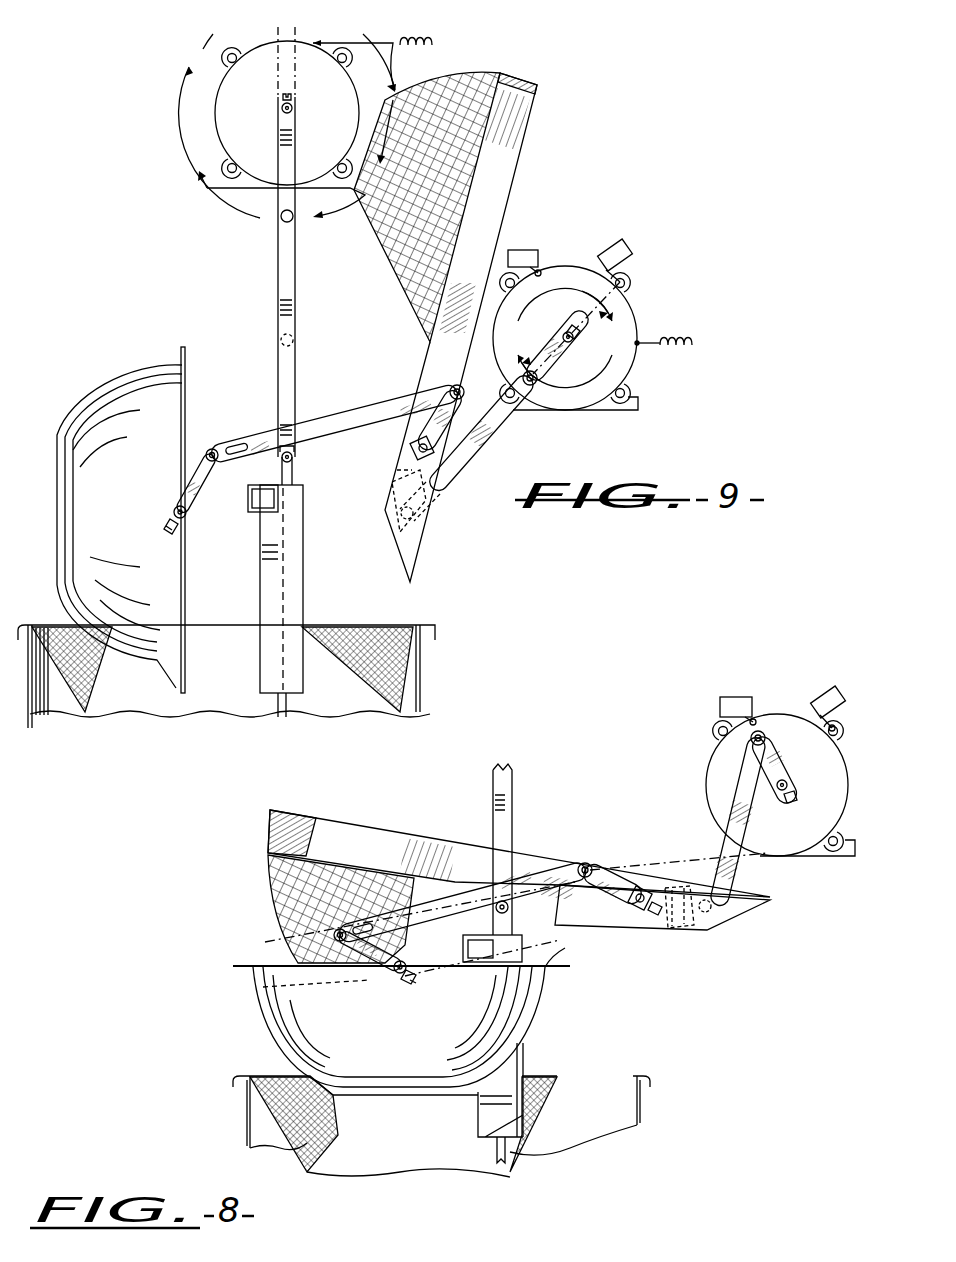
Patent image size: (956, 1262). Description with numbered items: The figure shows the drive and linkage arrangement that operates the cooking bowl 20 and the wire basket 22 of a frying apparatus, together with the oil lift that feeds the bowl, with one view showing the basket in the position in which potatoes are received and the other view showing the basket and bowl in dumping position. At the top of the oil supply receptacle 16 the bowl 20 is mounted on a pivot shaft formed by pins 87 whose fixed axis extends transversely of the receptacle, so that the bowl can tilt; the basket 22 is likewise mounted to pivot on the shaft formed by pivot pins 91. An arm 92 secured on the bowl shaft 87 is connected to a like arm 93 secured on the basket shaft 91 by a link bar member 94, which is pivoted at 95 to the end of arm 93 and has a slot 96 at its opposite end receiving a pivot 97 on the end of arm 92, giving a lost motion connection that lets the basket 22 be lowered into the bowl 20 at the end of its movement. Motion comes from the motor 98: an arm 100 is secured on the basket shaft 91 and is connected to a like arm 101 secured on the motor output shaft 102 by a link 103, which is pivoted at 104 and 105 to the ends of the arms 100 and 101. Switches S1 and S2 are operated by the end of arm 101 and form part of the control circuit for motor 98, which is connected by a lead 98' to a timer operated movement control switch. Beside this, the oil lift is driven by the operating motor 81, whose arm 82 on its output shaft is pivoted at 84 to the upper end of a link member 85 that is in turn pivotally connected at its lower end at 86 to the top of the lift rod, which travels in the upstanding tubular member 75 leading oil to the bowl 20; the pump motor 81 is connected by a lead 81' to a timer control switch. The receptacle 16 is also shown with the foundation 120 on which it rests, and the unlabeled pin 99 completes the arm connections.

In FIG. 9, the oil supply receptacle 16 is at (431, 690).
In FIG. 8, the oil supply receptacle 16 is at (641, 1119).
In FIG. 9, the cooking bowl 20 is at (76, 488).
In FIG. 8, the cooking bowl 20 is at (271, 998).
In FIG. 9, the wire basket 22 is at (392, 233).
In FIG. 8, the wire basket 22 is at (286, 875).
In FIG. 9, the upstanding tubular member 75 is at (301, 590).
In FIG. 8, the upstanding tubular member 75 is at (524, 1068).
In FIG. 9, the operating motor 81 is at (287, 126).
In FIG. 9, the lead 81' is at (417, 60).
In FIG. 9, the arm 82 is at (282, 128).
In FIG. 9, the pivot 84 is at (300, 103).
In FIG. 9, the link member 85 is at (290, 293).
In FIG. 8, the link member 85 is at (505, 829).
In FIG. 9, the pivot 86 is at (292, 457).
In FIG. 8, the pivot 86 is at (502, 907).
In FIG. 9, the pivot pins 87 is at (174, 511).
In FIG. 8, the pivot pins 87 is at (399, 981).
In FIG. 9, the pivot pins 91 is at (415, 448).
In FIG. 8, the pivot pins 91 is at (639, 906).
In FIG. 9, the arm 92 is at (205, 489).
In FIG. 8, the arm 92 is at (379, 961).
In FIG. 9, the arm 93 is at (463, 399).
In FIG. 8, the arm 93 is at (616, 880).
In FIG. 9, the link bar member 94 is at (355, 401).
In FIG. 8, the link bar member 94 is at (468, 896).
In FIG. 9, the pivot 95 is at (455, 385).
In FIG. 8, the pivot 95 is at (587, 862).
In FIG. 9, the slot 96 is at (237, 448).
In FIG. 8, the slot 96 is at (346, 927).
In FIG. 8, the pivot 97 is at (332, 933).
In FIG. 9, the motor 98 is at (565, 320).
In FIG. 8, the motor 98 is at (780, 763).
In FIG. 9, the lead 98' is at (663, 363).
In FIG. 9, the pin 99 is at (212, 449).
In FIG. 9, the arm 100 is at (397, 478).
In FIG. 8, the arm 100 is at (673, 930).
In FIG. 9, the arm 101 is at (549, 345).
In FIG. 8, the arm 101 is at (782, 766).
In FIG. 9, the motor output shaft 102 is at (576, 345).
In FIG. 8, the motor output shaft 102 is at (792, 789).
In FIG. 9, the link 103 is at (505, 414).
In FIG. 8, the link 103 is at (722, 846).
In FIG. 9, the pivot 104 is at (426, 521).
In FIG. 8, the pivot 104 is at (721, 921).
In FIG. 9, the pivot 105 is at (540, 395).
In FIG. 8, the pivot 105 is at (750, 742).
In FIG. 9, the foundation 120 is at (105, 692).
In FIG. 8, the foundation 120 is at (300, 1110).
In FIG. 9, the switch S1 is at (518, 249).
In FIG. 8, the switch S1 is at (738, 698).
In FIG. 9, the switch S2 is at (627, 253).
In FIG. 8, the switch S2 is at (826, 691).